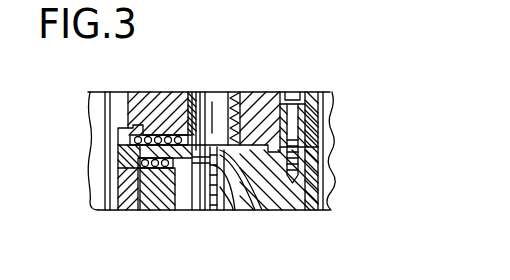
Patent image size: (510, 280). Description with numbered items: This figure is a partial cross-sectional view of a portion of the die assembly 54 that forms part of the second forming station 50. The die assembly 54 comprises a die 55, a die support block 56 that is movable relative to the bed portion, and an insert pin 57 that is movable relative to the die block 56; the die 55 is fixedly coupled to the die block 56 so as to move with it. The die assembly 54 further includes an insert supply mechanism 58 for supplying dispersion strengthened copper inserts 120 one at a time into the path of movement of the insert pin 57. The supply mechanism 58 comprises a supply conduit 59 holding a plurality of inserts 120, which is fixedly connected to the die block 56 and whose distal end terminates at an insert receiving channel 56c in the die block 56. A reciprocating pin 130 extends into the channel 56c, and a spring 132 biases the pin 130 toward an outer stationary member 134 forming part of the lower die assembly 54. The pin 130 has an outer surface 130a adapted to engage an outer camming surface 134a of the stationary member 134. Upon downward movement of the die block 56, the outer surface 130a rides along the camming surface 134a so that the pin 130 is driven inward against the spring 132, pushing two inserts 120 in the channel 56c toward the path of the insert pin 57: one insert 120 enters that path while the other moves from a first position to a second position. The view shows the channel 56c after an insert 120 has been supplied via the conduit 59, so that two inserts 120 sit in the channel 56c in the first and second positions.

The second forming station 50 is at (332, 78).
The die assembly 54 is at (241, 66).
The die 55 is at (241, 110).
The die support block 56 is at (311, 176).
The insert receiving channel 56c is at (189, 135).
The insert pin 57 is at (228, 203).
The insert supply mechanism 58 is at (153, 174).
The supply conduit 59 is at (179, 207).
The dispersion strengthened copper insert 120 is at (255, 203).
The reciprocating pin 130 is at (118, 128).
The outer surface 130a is at (118, 150).
The spring 132 is at (152, 140).
The outer stationary member 134 is at (107, 205).
The outer camming surface 134a is at (118, 182).